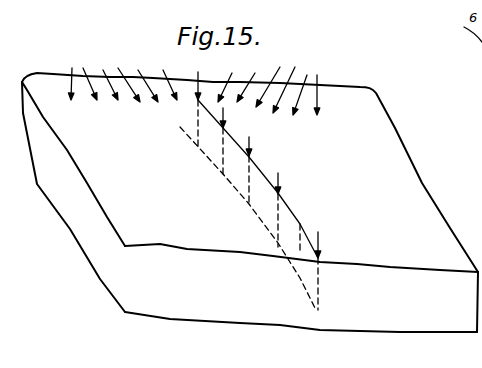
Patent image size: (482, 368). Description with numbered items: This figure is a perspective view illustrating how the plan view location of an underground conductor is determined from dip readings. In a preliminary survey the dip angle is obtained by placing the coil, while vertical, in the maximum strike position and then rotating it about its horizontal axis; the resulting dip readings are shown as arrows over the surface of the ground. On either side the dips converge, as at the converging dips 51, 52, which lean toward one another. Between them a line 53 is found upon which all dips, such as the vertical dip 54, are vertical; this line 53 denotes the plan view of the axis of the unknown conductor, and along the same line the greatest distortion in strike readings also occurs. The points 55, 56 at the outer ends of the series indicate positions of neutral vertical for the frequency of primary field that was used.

The converging dip 51 is at (146, 80).
The converging dip 52 is at (290, 80).
The line of vertical dips 53 is at (258, 165).
The vertical dip 54 is at (300, 217).
The neutral vertical point 55 is at (72, 79).
The neutral vertical point 56 is at (317, 91).